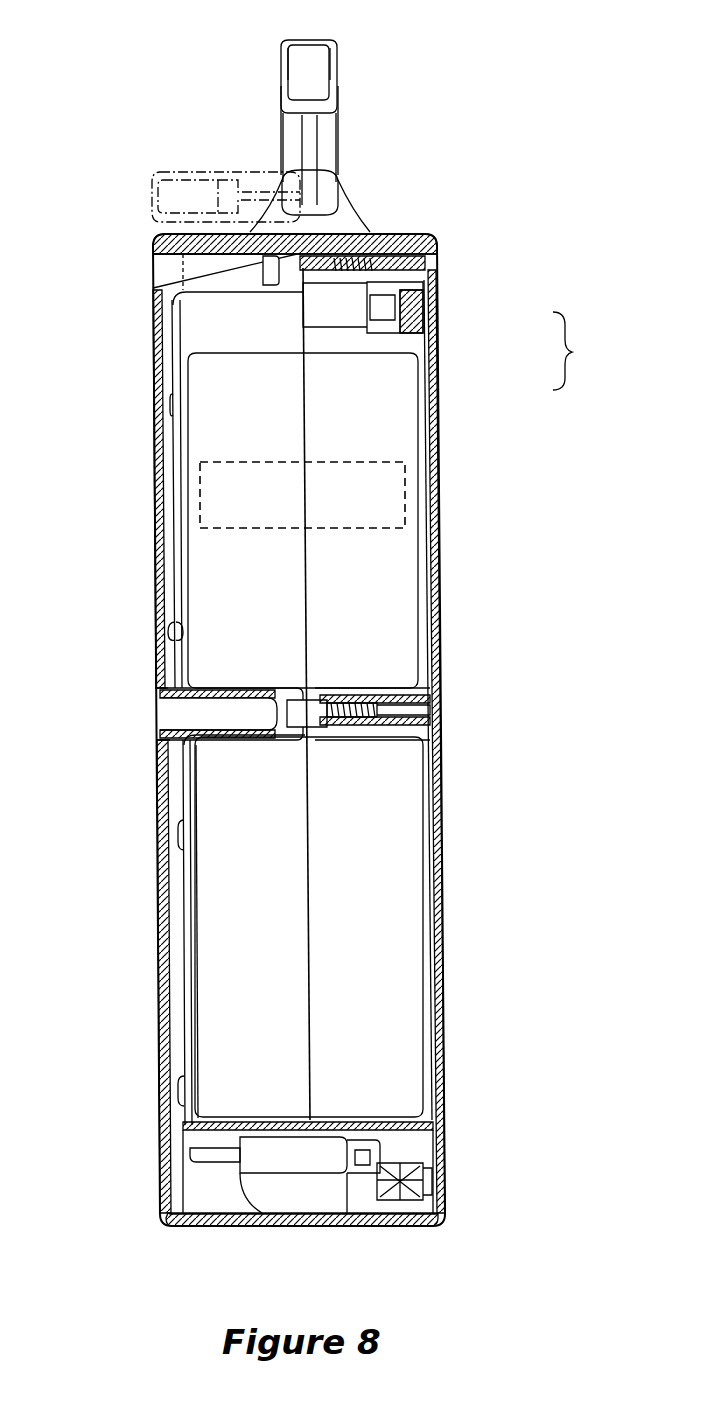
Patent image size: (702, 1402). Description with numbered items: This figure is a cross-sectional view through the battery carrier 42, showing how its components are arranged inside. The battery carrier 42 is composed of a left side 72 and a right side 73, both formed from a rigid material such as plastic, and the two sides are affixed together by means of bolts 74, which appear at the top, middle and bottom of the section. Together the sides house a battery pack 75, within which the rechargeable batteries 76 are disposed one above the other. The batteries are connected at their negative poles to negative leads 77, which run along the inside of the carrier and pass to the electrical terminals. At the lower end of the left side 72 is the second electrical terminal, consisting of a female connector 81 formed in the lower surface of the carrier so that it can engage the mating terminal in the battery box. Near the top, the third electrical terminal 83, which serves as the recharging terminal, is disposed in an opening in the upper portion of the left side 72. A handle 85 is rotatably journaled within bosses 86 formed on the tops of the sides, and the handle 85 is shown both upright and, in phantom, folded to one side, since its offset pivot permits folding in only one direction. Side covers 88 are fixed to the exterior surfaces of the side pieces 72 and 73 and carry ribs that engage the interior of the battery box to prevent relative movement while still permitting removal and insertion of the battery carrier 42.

The battery carrier 42 is at (584, 351).
The left side 72 is at (441, 349).
The right side 73 is at (153, 507).
The bolts 74 is at (264, 286).
The battery pack 75 is at (428, 394).
The rechargeable batteries 76 is at (405, 490).
The negative leads 77 is at (186, 968).
The female connector 81 is at (385, 1207).
The third electrical terminal 83 is at (336, 327).
The handle 85 is at (358, 38).
The bosses 86 is at (338, 203).
The side covers 88 is at (440, 592).